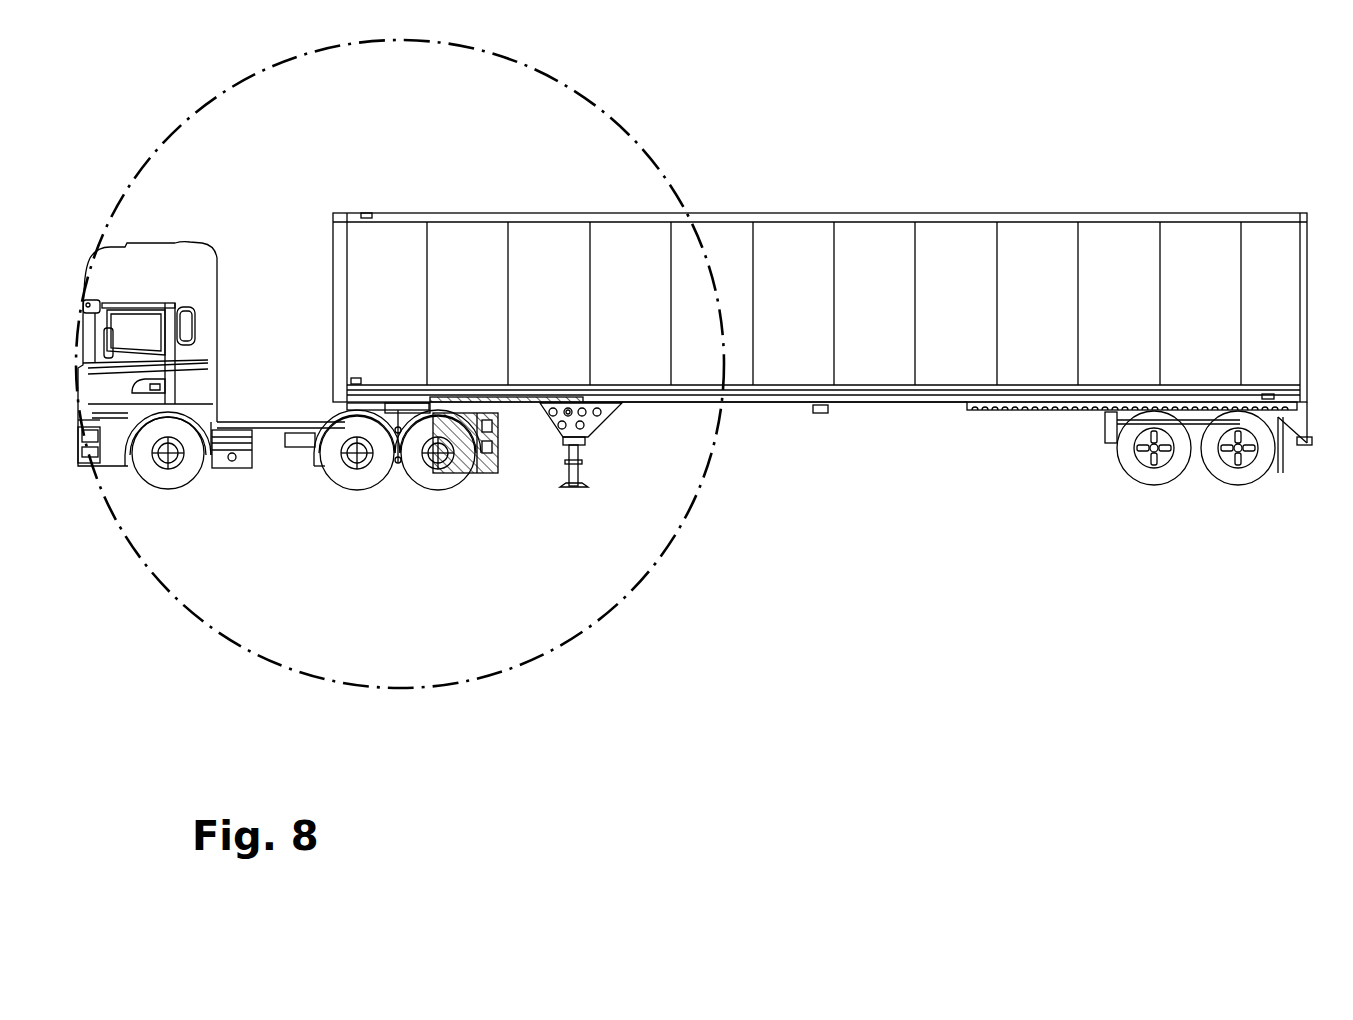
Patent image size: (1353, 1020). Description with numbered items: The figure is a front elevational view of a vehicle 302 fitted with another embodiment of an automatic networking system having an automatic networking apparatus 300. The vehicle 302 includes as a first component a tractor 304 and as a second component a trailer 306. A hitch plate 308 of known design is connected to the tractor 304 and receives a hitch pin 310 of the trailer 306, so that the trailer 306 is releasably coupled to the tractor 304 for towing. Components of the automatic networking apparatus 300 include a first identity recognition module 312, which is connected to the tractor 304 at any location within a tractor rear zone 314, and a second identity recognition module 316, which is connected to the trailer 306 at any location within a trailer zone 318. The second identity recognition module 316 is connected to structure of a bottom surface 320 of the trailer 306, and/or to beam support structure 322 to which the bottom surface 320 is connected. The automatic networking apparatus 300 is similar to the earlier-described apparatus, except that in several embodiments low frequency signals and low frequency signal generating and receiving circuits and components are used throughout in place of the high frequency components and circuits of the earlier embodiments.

The automatic networking apparatus 300 is at (498, 489).
The vehicle 302 is at (303, 209).
The tractor 304 is at (152, 260).
The trailer 306 is at (782, 215).
The hitch plate 308 is at (400, 458).
The hitch pin 310 is at (392, 403).
The first identity recognition module 312 is at (497, 427).
The tractor rear zone 314 is at (506, 456).
The second identity recognition module 316 is at (492, 397).
The trailer zone 318 is at (532, 389).
The bottom surface 320 is at (738, 402).
The beam support structure 322 is at (670, 403).